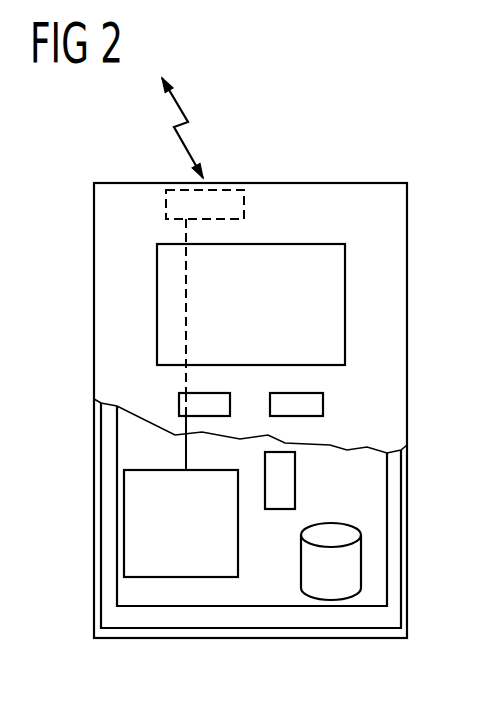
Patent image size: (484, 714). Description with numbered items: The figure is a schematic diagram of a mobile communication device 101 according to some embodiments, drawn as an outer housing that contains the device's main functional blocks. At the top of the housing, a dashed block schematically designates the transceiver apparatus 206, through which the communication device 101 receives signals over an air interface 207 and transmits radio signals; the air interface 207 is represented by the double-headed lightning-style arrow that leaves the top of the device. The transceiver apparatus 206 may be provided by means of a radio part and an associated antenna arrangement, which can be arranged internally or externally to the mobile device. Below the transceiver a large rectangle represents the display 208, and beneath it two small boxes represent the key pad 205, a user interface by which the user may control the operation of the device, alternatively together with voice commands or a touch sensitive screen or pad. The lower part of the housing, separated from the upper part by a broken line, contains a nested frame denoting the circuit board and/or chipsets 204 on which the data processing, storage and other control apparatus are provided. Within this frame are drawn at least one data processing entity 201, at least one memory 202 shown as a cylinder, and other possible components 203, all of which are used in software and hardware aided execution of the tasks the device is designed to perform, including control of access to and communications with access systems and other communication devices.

The communication device 101 is at (310, 183).
The data processing entity 201 is at (124, 521).
The memory 202 is at (330, 600).
The other possible components 203 is at (295, 467).
The circuit board and/or chipsets 204 is at (126, 594).
The key pad 205 is at (179, 405).
The transceiver apparatus 206 is at (244, 207).
The air interface 207 is at (184, 114).
The display 208 is at (157, 305).